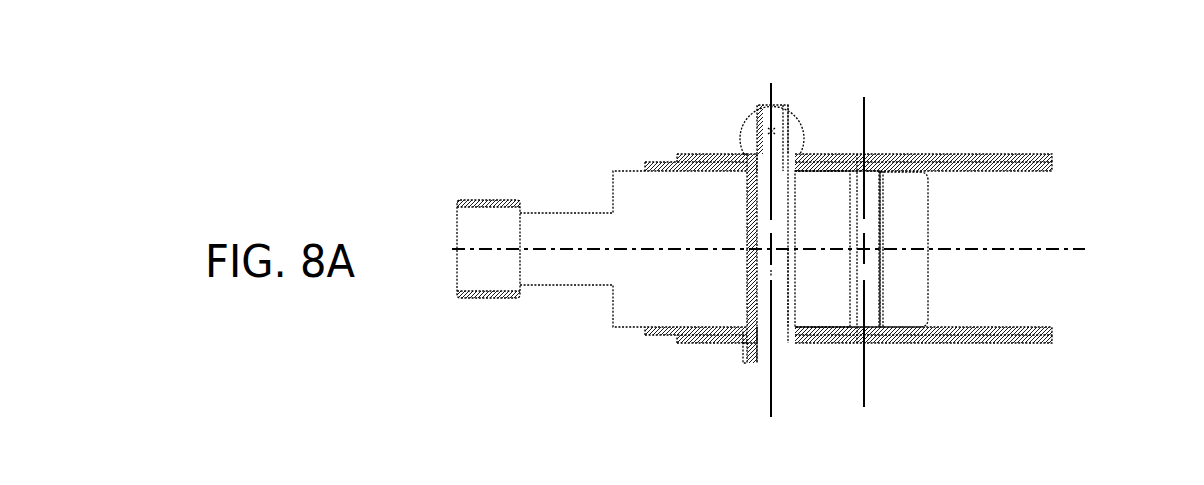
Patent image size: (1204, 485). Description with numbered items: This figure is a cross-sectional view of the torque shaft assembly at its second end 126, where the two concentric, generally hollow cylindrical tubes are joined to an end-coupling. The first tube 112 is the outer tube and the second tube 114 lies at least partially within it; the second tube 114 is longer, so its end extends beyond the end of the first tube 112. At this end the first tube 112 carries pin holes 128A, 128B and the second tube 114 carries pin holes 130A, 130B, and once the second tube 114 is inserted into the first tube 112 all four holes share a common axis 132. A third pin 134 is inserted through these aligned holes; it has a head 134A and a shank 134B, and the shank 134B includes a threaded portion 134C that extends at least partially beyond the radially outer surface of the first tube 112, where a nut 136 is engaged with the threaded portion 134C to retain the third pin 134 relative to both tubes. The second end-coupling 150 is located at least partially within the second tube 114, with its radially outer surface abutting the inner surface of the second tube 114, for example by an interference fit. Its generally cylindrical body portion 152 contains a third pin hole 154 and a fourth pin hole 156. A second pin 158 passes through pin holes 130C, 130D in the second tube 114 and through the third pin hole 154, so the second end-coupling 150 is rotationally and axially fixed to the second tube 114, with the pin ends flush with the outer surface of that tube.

The second end 126 is at (445, 128).
The second end-coupling 150 is at (634, 186).
The first tube 112 is at (995, 160).
The second tube 114 is at (1047, 168).
The pin hole 128A is at (748, 160).
The pin hole 128B is at (748, 342).
The pin hole 130A is at (748, 163).
The pin hole 130B is at (747, 330).
The pin hole 130C is at (882, 168).
The pin hole 130D is at (883, 333).
The common axis 132 is at (775, 93).
The third pin 134 is at (777, 323).
The head 134A is at (760, 352).
The shank 134B is at (780, 285).
The threaded portion 134C is at (757, 107).
The nut 136 is at (793, 132).
The body portion 152 is at (922, 310).
The third pin hole 154 is at (882, 268).
The fourth pin hole 156 is at (795, 268).
The second pin 158 is at (868, 222).